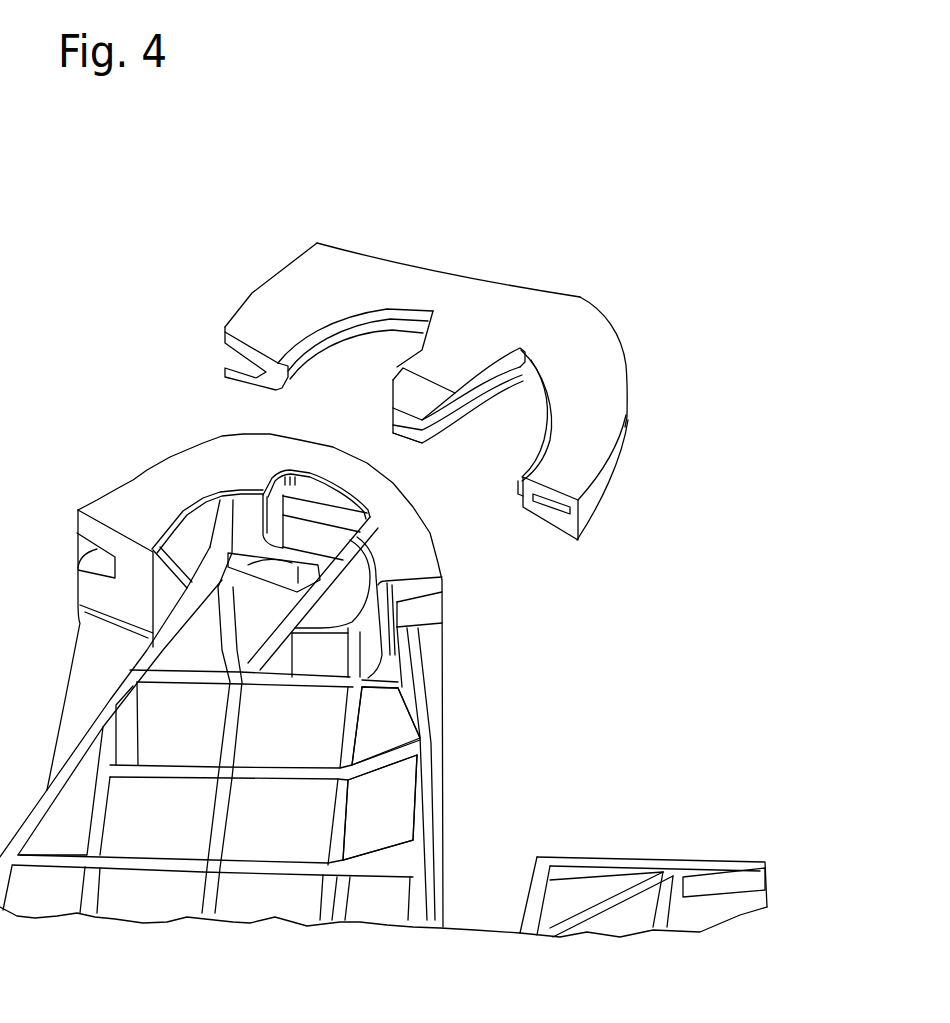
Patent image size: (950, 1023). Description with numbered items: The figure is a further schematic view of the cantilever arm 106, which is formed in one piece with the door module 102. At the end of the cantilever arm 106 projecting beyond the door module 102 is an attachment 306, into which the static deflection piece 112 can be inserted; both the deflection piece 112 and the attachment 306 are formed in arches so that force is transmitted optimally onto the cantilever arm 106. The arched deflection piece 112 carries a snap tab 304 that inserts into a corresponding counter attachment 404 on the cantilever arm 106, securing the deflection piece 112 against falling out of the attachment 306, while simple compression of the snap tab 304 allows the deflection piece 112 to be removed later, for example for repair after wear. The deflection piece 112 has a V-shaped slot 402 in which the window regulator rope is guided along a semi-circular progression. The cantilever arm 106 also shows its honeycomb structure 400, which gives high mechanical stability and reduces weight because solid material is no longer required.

The door module 102 is at (667, 868).
The cantilever arm 106 is at (439, 854).
The static deflection piece 112 is at (607, 353).
The snap tab 304 is at (443, 437).
The attachment 306 is at (423, 613).
The honeycomb structure 400 is at (392, 802).
The V-shaped slot 402 is at (560, 510).
The counter attachment 404 is at (310, 508).